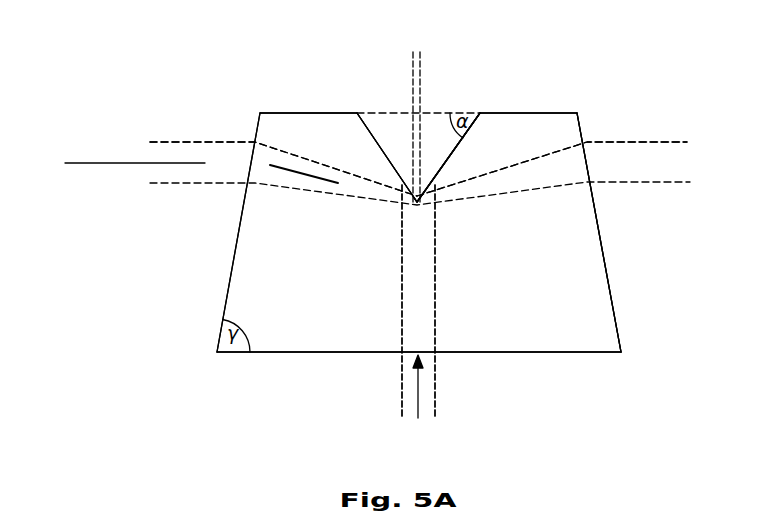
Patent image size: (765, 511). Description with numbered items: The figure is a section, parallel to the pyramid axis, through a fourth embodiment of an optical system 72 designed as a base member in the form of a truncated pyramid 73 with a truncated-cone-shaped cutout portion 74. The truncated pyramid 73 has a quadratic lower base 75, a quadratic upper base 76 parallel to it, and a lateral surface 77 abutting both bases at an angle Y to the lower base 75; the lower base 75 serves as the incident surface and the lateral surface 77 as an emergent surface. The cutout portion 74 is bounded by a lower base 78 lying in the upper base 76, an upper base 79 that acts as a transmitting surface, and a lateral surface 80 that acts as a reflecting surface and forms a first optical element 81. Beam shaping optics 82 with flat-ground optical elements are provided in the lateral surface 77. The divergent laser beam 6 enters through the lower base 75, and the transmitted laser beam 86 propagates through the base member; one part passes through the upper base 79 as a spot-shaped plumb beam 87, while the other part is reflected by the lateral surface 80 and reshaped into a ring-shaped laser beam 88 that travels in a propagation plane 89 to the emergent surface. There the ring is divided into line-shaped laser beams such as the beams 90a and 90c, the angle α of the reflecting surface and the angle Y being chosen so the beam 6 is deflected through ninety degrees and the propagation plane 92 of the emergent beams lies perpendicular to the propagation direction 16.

The divergent laser beam 6 is at (437, 385).
The propagation direction 16 is at (416, 397).
The optical system 72 is at (135, 232).
The truncated pyramid 73 is at (616, 318).
The cutout portion 74 is at (431, 157).
The lower base 75 is at (297, 354).
The upper base 76 is at (280, 112).
The lateral surface 77 is at (226, 303).
The lower base 78 is at (388, 112).
The upper base 79 is at (417, 204).
The lateral surface 80 is at (389, 165).
The first optical element 81 is at (466, 141).
The beam shaping optics 82 is at (598, 160).
The transmitted laser beam 86 is at (437, 310).
The plumb beam 87 is at (422, 68).
The ring-shaped laser beam 88 is at (322, 163).
The propagation plane 89 is at (305, 180).
The line-shaped laser beam 90a is at (660, 142).
The line-shaped laser beam 90c is at (173, 142).
The propagation plane 92 is at (98, 162).